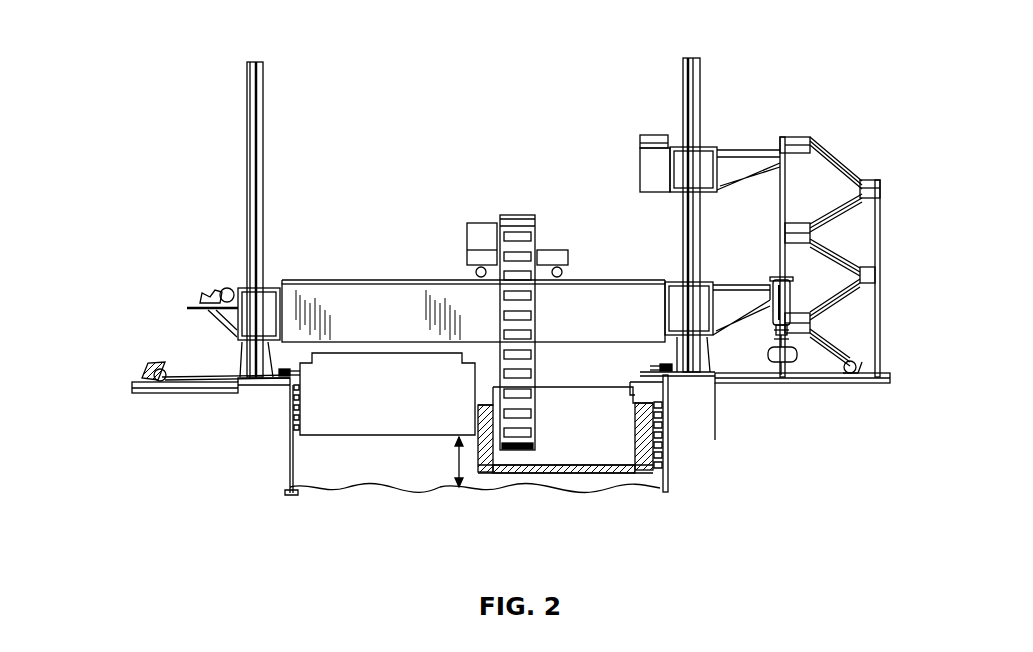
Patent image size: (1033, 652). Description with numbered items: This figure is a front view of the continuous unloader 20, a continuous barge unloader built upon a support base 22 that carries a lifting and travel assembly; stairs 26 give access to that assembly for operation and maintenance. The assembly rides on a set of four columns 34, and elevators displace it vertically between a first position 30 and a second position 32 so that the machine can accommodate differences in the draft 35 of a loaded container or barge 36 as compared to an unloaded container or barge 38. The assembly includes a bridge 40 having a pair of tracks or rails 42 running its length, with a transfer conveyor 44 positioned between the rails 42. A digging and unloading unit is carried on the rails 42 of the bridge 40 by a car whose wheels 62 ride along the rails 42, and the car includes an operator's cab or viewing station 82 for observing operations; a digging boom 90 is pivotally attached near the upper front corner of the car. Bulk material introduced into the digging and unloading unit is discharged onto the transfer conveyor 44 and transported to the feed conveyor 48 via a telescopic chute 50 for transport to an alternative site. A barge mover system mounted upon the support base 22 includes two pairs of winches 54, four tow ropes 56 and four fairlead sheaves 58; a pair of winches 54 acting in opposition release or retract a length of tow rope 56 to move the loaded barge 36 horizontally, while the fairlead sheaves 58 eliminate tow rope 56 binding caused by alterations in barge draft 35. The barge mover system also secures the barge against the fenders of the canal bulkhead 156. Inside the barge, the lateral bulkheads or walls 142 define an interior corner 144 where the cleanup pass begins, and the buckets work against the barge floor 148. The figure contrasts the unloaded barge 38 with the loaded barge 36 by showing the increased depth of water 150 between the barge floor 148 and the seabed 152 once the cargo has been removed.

The continuous unloader 20 is at (478, 165).
The support base 22 is at (130, 381).
The stairs 26 is at (853, 214).
The first position 30 is at (685, 283).
The second position 32 is at (685, 148).
The columns 34 is at (263, 86).
The draft 35 is at (465, 482).
The loaded container or barge 36 is at (583, 476).
The unloaded container or barge 38 is at (337, 443).
The bridge 40 is at (366, 296).
The tracks or rails 42 is at (615, 280).
The transfer conveyor 44 is at (232, 288).
The feed conveyor 48 is at (797, 353).
The telescopic chute 50 is at (793, 300).
The winches 54 is at (145, 368).
The tow ropes 56 is at (197, 377).
The fairlead sheaves 58 is at (282, 370).
The wheels 62 is at (474, 276).
The operator's cab or viewing station 82 is at (482, 222).
The digging boom 90 is at (543, 377).
The lateral bulkheads or walls 142 is at (473, 393).
The interior corner 144 is at (622, 460).
The barge floor 148 is at (592, 452).
The depth of water 150 is at (412, 456).
The seabed 152 is at (455, 490).
The canal bulkhead 156 is at (668, 445).